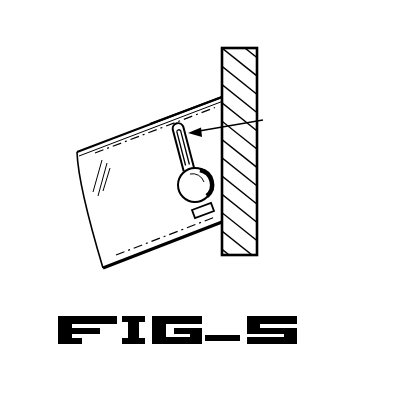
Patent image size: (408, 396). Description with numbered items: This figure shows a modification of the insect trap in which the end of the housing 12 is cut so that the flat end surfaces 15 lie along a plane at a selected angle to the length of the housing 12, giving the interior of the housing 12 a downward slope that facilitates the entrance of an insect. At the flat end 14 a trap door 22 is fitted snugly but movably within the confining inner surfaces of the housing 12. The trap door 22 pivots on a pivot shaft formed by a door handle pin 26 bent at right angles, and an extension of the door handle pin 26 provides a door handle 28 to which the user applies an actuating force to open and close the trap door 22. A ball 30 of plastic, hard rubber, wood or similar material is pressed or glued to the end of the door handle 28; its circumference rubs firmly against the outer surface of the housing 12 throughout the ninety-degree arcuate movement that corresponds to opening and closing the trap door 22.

The housing 12 is at (125, 136).
The flat end 14 is at (205, 88).
The flat end surfaces 15 is at (250, 92).
The trap door 22 is at (173, 159).
The door handle pin 26 is at (238, 123).
The door handle 28 is at (203, 152).
The ball 30 is at (186, 192).